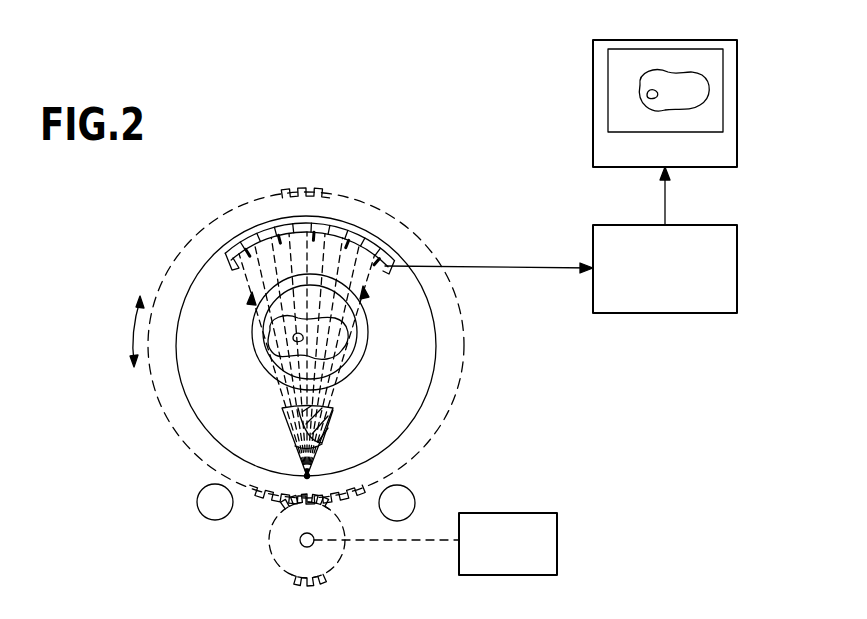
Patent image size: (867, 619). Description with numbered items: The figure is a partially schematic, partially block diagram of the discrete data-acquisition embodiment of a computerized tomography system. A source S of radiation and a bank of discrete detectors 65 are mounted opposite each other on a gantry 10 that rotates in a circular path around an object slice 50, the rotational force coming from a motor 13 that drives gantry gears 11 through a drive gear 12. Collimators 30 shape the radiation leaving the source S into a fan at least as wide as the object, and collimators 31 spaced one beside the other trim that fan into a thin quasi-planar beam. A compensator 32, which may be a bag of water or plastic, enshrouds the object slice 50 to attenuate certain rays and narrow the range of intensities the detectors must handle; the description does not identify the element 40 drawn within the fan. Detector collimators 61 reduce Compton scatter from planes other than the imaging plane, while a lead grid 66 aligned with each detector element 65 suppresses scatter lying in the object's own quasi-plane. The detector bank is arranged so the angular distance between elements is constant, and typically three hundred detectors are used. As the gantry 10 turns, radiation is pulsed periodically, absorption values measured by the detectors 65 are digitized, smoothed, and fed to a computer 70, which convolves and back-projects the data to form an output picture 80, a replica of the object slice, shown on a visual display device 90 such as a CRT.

The gantry 10 is at (457, 377).
The gantry gears 11 is at (263, 498).
The drive gear 12 is at (313, 577).
The motor 13 is at (557, 563).
The collimators 30 is at (333, 420).
The collimators 31 is at (323, 405).
The compensator 32 is at (257, 332).
The fan beam of rays 40 is at (282, 395).
The object slice 50 is at (275, 342).
The detector collimators 61 is at (284, 228).
The discrete detectors 65 is at (377, 243).
The grid 66 is at (268, 258).
The computer 70 is at (710, 313).
The output picture 80 is at (636, 93).
The visual display device 90 is at (737, 112).
The source S is at (312, 478).